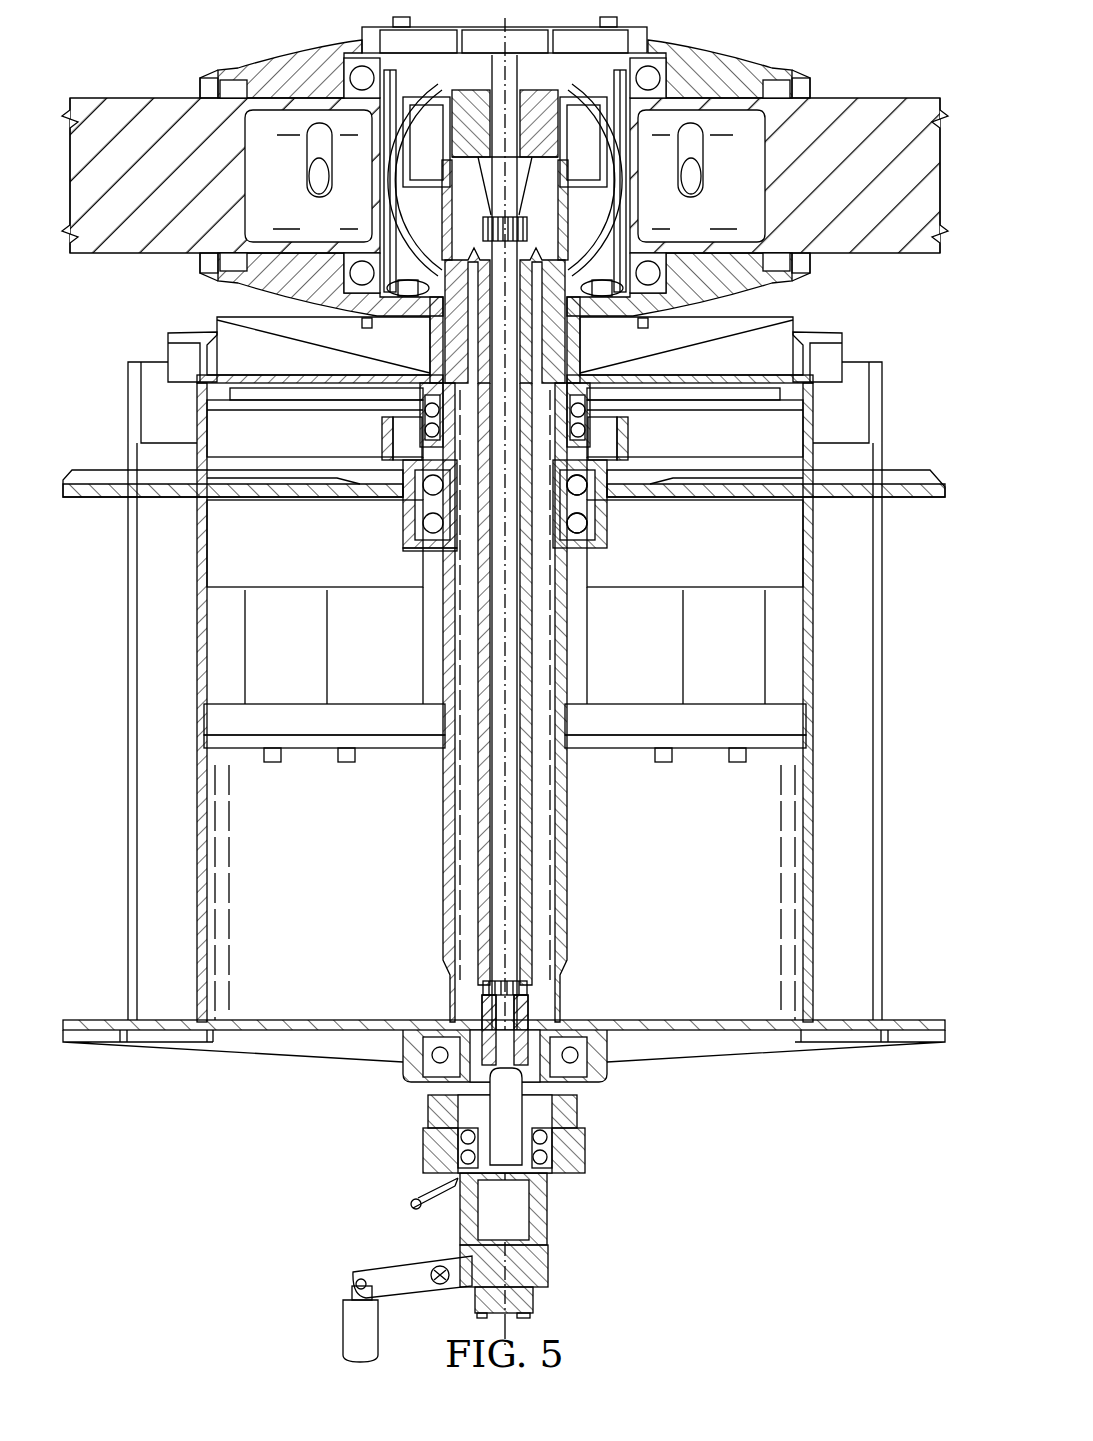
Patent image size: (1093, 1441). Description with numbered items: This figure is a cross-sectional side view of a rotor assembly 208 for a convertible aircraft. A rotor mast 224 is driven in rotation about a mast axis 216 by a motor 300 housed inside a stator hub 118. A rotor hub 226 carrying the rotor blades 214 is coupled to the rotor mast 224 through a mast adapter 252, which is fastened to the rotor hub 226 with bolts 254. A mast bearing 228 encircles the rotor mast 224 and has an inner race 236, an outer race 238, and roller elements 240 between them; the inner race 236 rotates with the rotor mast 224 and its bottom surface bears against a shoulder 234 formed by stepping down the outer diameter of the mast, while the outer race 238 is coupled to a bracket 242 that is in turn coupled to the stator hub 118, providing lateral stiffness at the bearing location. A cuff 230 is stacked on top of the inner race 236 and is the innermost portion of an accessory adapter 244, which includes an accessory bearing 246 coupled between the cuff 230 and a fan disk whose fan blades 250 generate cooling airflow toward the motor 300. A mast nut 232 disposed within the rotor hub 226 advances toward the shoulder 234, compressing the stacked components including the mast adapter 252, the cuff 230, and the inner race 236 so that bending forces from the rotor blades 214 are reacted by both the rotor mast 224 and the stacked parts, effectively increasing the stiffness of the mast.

The stator hub 118 is at (882, 808).
The rotor assembly 208 is at (266, 47).
The rotor blades 214 is at (128, 97).
The mast axis 216 is at (510, 825).
The rotor mast 224 is at (445, 805).
The rotor hub 226 is at (714, 58).
The mast bearing 228 is at (525, 551).
The cuff 230 is at (590, 390).
The mast nut 232 is at (398, 232).
The shoulder 234 is at (452, 550).
The inner race 236 is at (578, 548).
The outer race 238 is at (418, 497).
The roller elements 240 is at (612, 521).
The bracket 242 is at (908, 477).
The accessory adapter 244 is at (170, 333).
The accessory bearing 246 is at (398, 428).
The fan blades 250 is at (843, 345).
The mast adapter 252 is at (648, 322).
The bolts 254 is at (412, 315).
The motor 300 is at (812, 632).